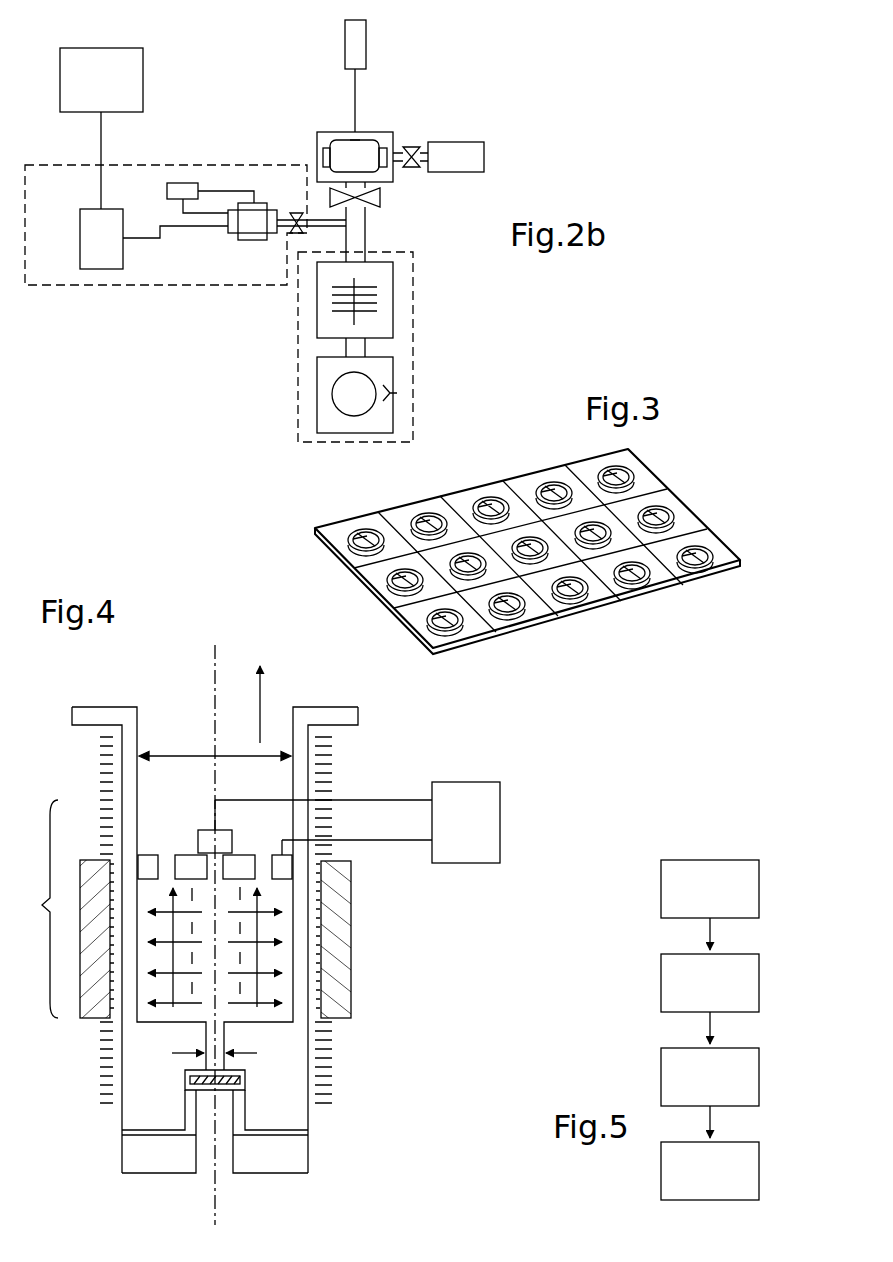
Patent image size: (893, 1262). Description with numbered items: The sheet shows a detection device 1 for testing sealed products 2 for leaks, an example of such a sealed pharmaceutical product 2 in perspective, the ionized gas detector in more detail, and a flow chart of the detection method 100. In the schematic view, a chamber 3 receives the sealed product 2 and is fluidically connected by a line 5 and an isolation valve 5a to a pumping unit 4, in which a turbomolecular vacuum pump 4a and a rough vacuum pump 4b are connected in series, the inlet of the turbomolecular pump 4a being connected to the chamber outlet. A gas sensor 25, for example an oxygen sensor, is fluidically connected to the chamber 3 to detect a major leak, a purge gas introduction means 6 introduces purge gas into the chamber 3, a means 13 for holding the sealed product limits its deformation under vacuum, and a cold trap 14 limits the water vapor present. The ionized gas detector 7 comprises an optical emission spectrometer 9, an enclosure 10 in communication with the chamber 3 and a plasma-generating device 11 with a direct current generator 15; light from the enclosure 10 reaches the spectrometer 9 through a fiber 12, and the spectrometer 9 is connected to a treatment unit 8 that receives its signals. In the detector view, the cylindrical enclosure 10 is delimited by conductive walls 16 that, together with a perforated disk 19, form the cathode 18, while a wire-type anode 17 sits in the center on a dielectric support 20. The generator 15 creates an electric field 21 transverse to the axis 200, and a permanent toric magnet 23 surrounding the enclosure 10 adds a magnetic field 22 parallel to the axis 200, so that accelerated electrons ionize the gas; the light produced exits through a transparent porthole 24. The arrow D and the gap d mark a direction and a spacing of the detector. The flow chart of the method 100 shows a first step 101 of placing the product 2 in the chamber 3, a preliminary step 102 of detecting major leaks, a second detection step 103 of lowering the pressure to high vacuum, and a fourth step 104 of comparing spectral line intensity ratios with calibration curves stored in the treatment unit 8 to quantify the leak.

In FIG. 2B, the detection device 1 is at (436, 43).
In FIG. 2B, the sealed product 2 is at (340, 140).
In FIG. 3, the sealed product 2 is at (702, 478).
In FIG. 2B, the chamber 3 is at (367, 136).
In FIG. 2B, the pumping unit 4 is at (298, 382).
In FIG. 2B, the turbomolecular vacuum pump 4a is at (393, 303).
In FIG. 2B, the rough vacuum pump 4b is at (393, 373).
In FIG. 2B, the line 5 is at (366, 222).
In FIG. 2B, the isolation valve 5a is at (380, 197).
In FIG. 2B, the purge gas introduction means 6 is at (463, 132).
In FIG. 2B, the ionized gas detector 7 is at (50, 165).
In FIG. 2B, the treatment unit 8 is at (143, 72).
In FIG. 2B, the optical emission spectrometer 9 is at (80, 250).
In FIG. 2B, the enclosure 10 is at (253, 240).
In FIG. 4, the enclosure 10 is at (195, 721).
In FIG. 2B, the plasma-generating device 11 is at (224, 124).
In FIG. 2B, the fiber 12 is at (135, 240).
In FIG. 2B, the means for holding the sealed product 13 is at (385, 148).
In FIG. 2B, the cold trap 14 is at (345, 138).
In FIG. 2B, the direct current generator 15 is at (190, 183).
In FIG. 4, the direct current generator 15 is at (466, 822).
In FIG. 4, the walls 16 is at (348, 718).
In FIG. 4, the anode 17 is at (362, 800).
In FIG. 4, the cathode 18 is at (32, 909).
In FIG. 4, the perforated disk 19 is at (276, 855).
In FIG. 4, the support 20 is at (208, 830).
In FIG. 4, the electric field 21 is at (268, 1006).
In FIG. 4, the magnetic field 22 is at (260, 955).
In FIG. 4, the permanent toric magnet 23 is at (86, 1014).
In FIG. 4, the transparent porthole 24 is at (206, 1085).
In FIG. 2B, the gas sensor 25 is at (366, 45).
In FIG. 5, the detection method 100 is at (681, 836).
In FIG. 5, the first step 101 is at (710, 889).
In FIG. 5, the preliminary step of detecting major leaks 102 is at (710, 983).
In FIG. 5, the second detection step 103 is at (710, 1077).
In FIG. 5, the fourth step 104 is at (710, 1171).
In FIG. 4, the axis 200 is at (218, 1193).
In FIG. 4, the flow direction D is at (244, 704).
In FIG. 4, the nozzle width d is at (205, 1049).